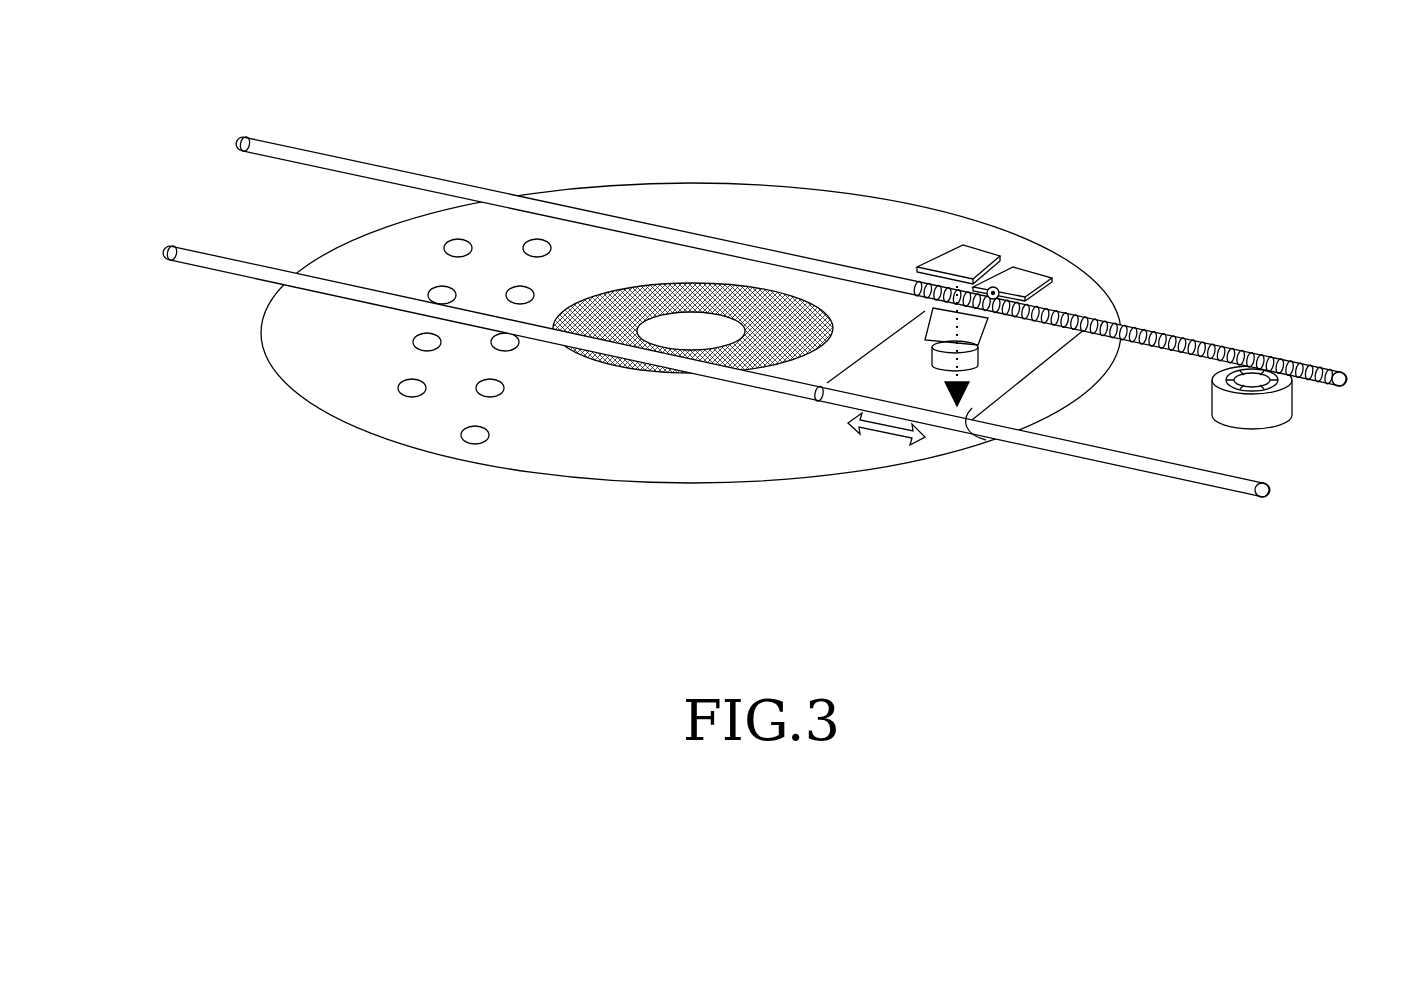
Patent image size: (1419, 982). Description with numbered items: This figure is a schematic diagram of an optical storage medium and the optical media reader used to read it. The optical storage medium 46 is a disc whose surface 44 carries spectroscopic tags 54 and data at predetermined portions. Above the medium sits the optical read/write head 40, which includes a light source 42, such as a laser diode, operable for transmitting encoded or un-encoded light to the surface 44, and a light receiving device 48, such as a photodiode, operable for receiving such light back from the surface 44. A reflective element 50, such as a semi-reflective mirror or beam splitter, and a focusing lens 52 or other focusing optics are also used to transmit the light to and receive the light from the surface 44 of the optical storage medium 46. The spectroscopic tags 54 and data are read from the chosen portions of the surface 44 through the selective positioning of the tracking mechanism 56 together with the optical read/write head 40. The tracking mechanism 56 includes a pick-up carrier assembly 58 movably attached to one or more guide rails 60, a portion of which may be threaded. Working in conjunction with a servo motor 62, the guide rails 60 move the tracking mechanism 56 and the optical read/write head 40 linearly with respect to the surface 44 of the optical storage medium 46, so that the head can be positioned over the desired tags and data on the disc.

The optical read/write head 40 is at (722, 319).
The light source 42 is at (1013, 287).
The surface 44 is at (713, 207).
The optical storage medium 46 is at (815, 207).
The light receiving device 48 is at (958, 250).
The reflective element 50 is at (1020, 300).
The focusing lens 52 is at (930, 347).
The spectroscopic tags 54 is at (412, 400).
The tracking mechanism 56 is at (950, 445).
The pick-up carrier assembly 58 is at (985, 437).
The guide rails 60 is at (243, 140).
The servo motor 62 is at (1268, 372).